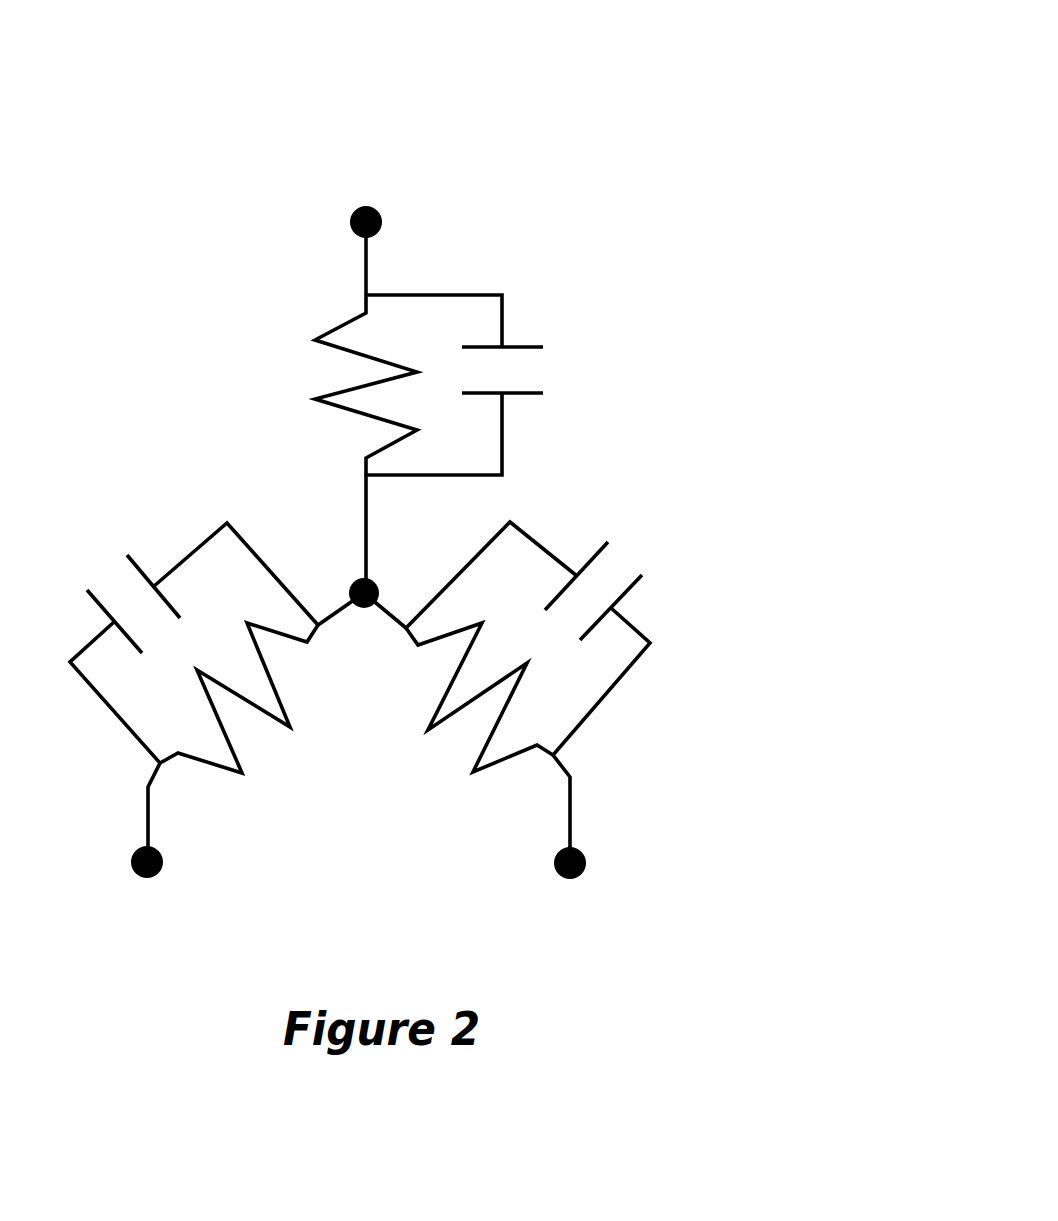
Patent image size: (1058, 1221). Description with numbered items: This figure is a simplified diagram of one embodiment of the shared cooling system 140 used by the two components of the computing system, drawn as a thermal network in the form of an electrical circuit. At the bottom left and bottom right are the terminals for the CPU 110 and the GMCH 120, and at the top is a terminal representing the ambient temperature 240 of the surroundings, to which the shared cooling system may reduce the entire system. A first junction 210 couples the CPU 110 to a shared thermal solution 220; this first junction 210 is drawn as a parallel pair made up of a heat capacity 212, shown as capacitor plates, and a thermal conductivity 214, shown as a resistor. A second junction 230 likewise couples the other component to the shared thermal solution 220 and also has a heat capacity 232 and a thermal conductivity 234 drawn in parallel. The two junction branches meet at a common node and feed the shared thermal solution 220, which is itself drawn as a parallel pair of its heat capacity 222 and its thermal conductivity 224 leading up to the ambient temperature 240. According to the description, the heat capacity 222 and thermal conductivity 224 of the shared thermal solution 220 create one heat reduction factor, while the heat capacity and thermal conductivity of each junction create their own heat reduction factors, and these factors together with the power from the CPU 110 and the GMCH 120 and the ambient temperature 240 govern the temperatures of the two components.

The cooling system 140 is at (712, 27).
The ambient temperature 240 is at (366, 238).
The shared thermal solution 220 is at (431, 426).
The thermal conductivity 224 is at (346, 385).
The heat capacity 222 is at (524, 370).
The first junction 210 is at (217, 692).
The heat capacity 212 is at (125, 602).
The thermal conductivity 214 is at (239, 698).
The CPU 110 is at (147, 878).
The second junction 230 is at (517, 692).
The heat capacity 232 is at (607, 588).
The thermal conductivity 234 is at (479, 697).
The GMCH 120 is at (571, 878).